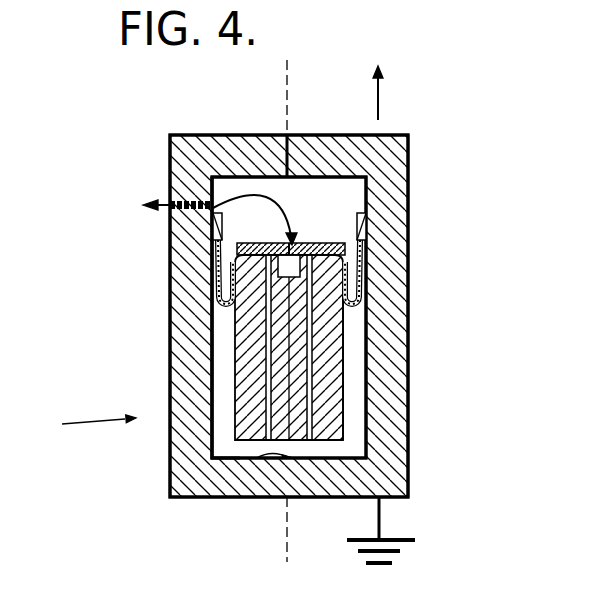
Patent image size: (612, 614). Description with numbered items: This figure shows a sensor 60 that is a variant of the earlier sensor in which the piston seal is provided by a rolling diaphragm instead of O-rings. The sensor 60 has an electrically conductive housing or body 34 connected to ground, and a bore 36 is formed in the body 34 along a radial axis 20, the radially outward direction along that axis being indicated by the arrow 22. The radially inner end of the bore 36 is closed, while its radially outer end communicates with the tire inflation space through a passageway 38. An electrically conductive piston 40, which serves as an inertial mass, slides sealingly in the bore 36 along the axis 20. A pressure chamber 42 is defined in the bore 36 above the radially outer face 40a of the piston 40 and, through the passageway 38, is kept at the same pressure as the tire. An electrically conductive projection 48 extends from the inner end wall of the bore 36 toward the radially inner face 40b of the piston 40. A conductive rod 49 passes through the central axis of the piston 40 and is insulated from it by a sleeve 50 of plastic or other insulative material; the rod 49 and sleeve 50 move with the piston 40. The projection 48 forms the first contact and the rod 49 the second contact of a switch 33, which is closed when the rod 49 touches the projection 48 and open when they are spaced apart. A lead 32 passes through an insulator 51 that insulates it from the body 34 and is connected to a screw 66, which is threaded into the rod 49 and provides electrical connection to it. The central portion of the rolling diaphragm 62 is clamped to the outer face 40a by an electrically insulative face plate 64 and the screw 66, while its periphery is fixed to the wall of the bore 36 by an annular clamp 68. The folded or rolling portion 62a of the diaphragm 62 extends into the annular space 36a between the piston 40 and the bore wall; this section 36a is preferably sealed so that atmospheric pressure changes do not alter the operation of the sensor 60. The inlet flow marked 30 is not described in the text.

The radial axis 20 is at (288, 95).
The arrow 22 is at (378, 103).
The inlet gas flow 30 is at (141, 205).
The lead 32 is at (168, 203).
The switch 33 is at (83, 426).
The housing or body 34 is at (393, 395).
The bore 36 is at (367, 174).
The annular space 36a is at (212, 458).
The passageway 38 is at (297, 137).
The piston 40 is at (352, 372).
The radially outer face of the piston 40a is at (344, 318).
The radially inner face of the piston 40b is at (345, 446).
The pressure chamber 42 is at (313, 204).
The projection 48 is at (262, 458).
The conductive rod 49 is at (289, 351).
The sleeve 50 is at (268, 381).
The insulator 51 is at (166, 213).
The sensor 60 is at (176, 116).
The rolling diaphragm 62 is at (222, 305).
The folded or rolling portion of the diaphragm 62a is at (360, 311).
The face plate 64 is at (346, 247).
The screw 66 is at (295, 242).
The annular clamp 68 is at (215, 238).